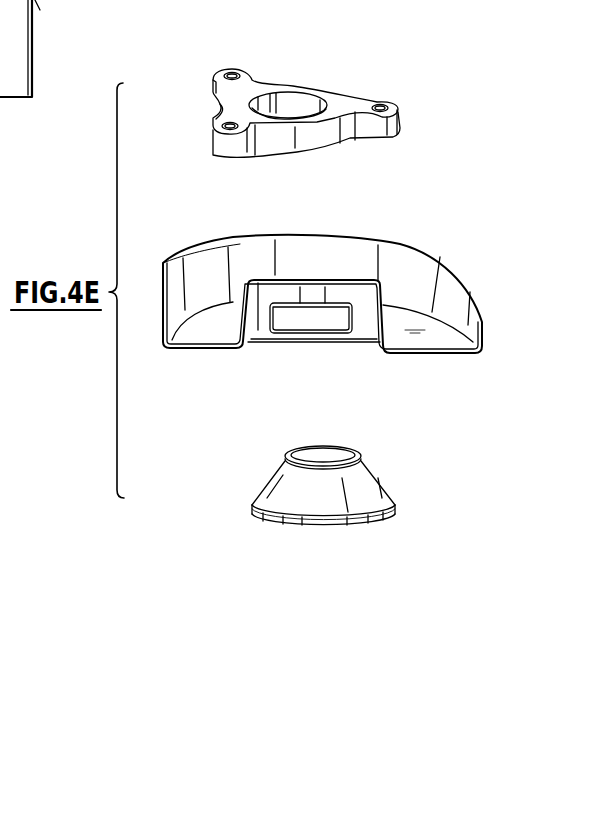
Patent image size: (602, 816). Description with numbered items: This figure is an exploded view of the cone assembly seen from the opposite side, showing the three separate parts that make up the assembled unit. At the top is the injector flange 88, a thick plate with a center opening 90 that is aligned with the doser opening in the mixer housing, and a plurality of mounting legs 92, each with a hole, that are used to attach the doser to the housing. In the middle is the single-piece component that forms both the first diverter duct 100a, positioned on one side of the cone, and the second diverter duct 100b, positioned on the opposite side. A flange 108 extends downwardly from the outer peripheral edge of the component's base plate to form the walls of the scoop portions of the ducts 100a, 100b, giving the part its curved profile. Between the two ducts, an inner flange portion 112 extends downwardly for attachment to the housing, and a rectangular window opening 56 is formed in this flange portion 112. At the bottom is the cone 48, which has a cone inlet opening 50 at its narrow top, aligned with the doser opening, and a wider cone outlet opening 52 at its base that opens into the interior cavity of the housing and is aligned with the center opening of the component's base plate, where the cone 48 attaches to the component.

The cone 48 is at (378, 485).
The cone inlet opening 50 is at (347, 447).
The cone outlet opening 52 is at (386, 523).
The window opening 56 is at (318, 322).
The injector flange 88 is at (262, 83).
The center opening 90 is at (295, 102).
The mounting legs 92 is at (218, 73).
The first diverter duct 100a is at (199, 350).
The second diverter duct 100b is at (428, 355).
The flange 108 is at (482, 326).
The inner flange portion 112 is at (255, 333).